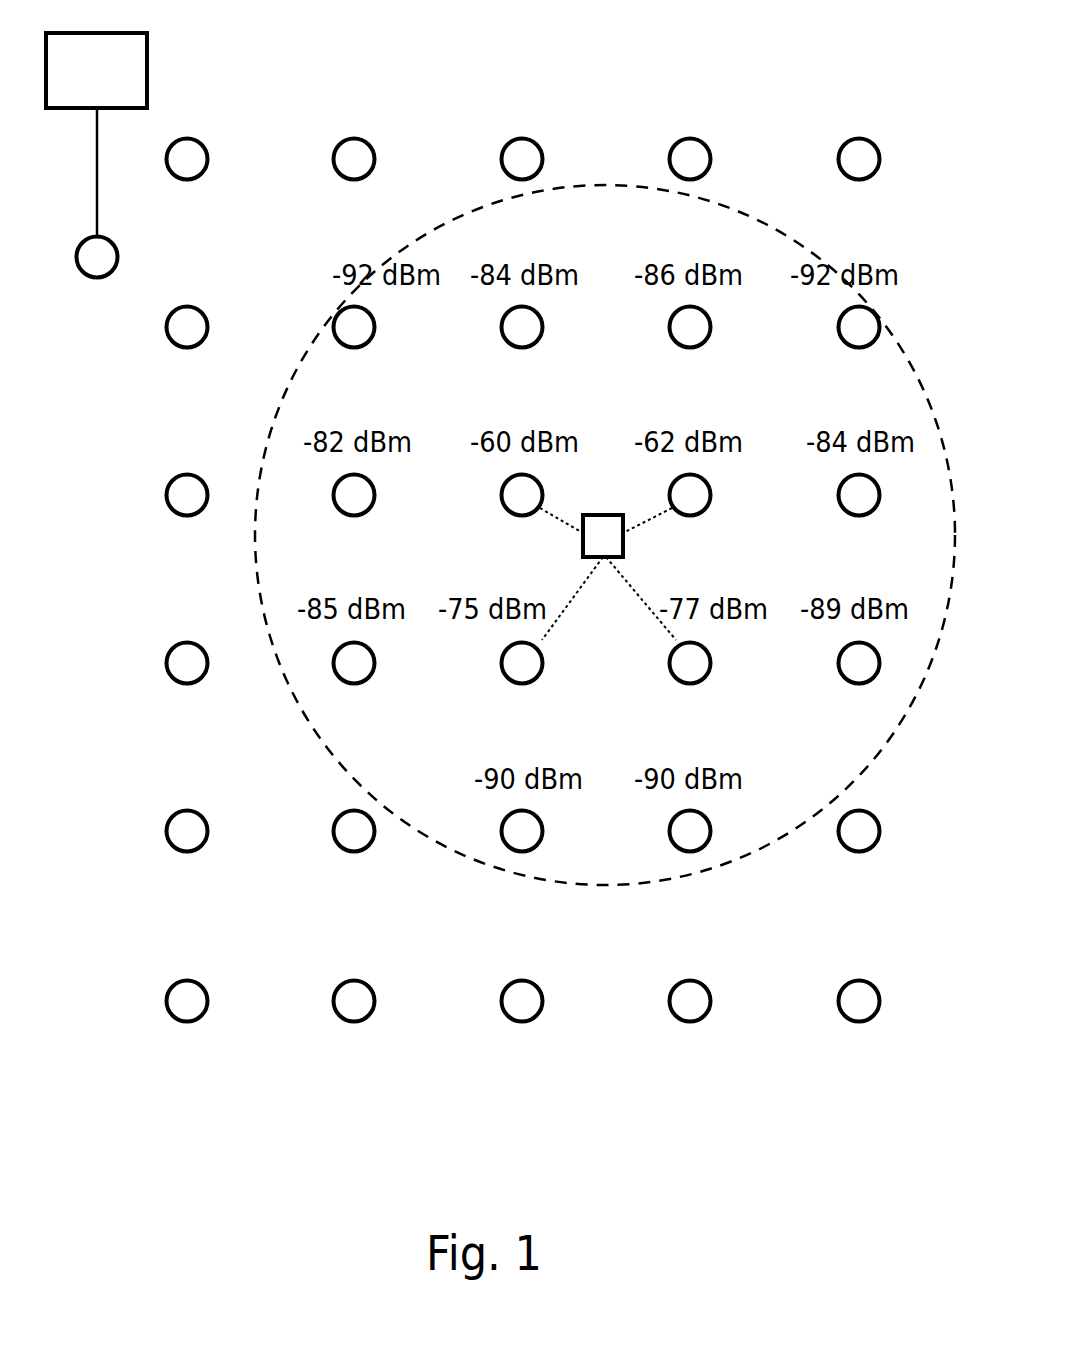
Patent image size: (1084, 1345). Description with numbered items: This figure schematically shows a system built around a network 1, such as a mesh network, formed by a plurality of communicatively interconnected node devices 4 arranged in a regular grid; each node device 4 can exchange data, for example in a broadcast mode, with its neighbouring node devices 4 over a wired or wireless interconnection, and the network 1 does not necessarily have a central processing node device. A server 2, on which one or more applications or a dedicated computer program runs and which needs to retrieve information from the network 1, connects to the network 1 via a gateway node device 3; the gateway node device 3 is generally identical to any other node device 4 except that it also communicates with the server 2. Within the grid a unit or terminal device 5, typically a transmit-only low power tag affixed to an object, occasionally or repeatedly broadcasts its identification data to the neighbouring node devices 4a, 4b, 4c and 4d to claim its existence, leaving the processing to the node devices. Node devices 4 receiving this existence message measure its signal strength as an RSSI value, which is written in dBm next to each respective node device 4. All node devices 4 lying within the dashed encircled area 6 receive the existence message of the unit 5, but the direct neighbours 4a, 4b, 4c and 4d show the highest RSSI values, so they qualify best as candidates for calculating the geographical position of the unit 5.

The network 1 is at (643, 70).
The server 2 is at (132, 50).
The gateway node device 3 is at (105, 257).
The node device 4 is at (190, 155).
The node device 4a is at (515, 495).
The node device 4b is at (697, 500).
The node device 4c is at (526, 667).
The node device 4d is at (694, 667).
The unit or terminal device 5 is at (597, 528).
The dashed encircled area 6 is at (727, 230).